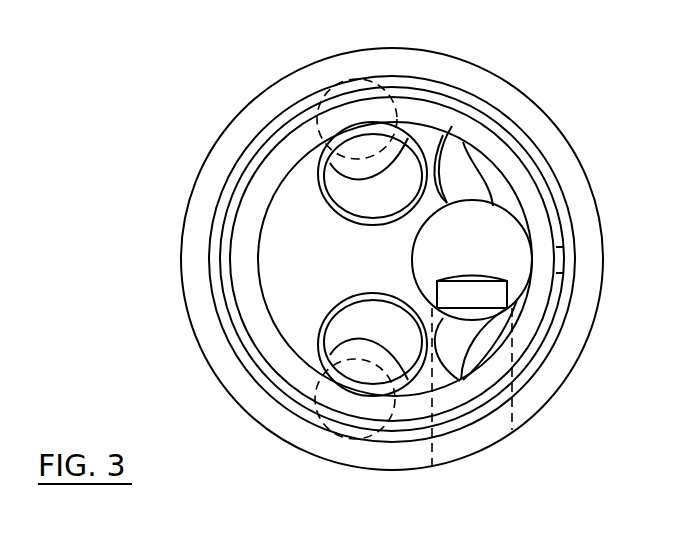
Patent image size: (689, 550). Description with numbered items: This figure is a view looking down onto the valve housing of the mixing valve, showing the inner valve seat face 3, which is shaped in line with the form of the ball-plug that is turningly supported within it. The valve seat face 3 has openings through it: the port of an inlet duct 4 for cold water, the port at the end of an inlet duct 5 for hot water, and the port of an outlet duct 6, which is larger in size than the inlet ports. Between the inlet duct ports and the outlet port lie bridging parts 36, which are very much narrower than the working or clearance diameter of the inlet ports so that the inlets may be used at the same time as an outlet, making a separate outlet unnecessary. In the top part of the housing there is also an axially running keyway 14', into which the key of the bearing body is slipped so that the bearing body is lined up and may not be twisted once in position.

The valve seat face 3 is at (300, 280).
The inlet duct 4 is at (330, 86).
The inlet duct 5 is at (336, 437).
The outlet duct 6 is at (440, 450).
The keyway 14' is at (616, 254).
The bridging parts 36 is at (443, 135).